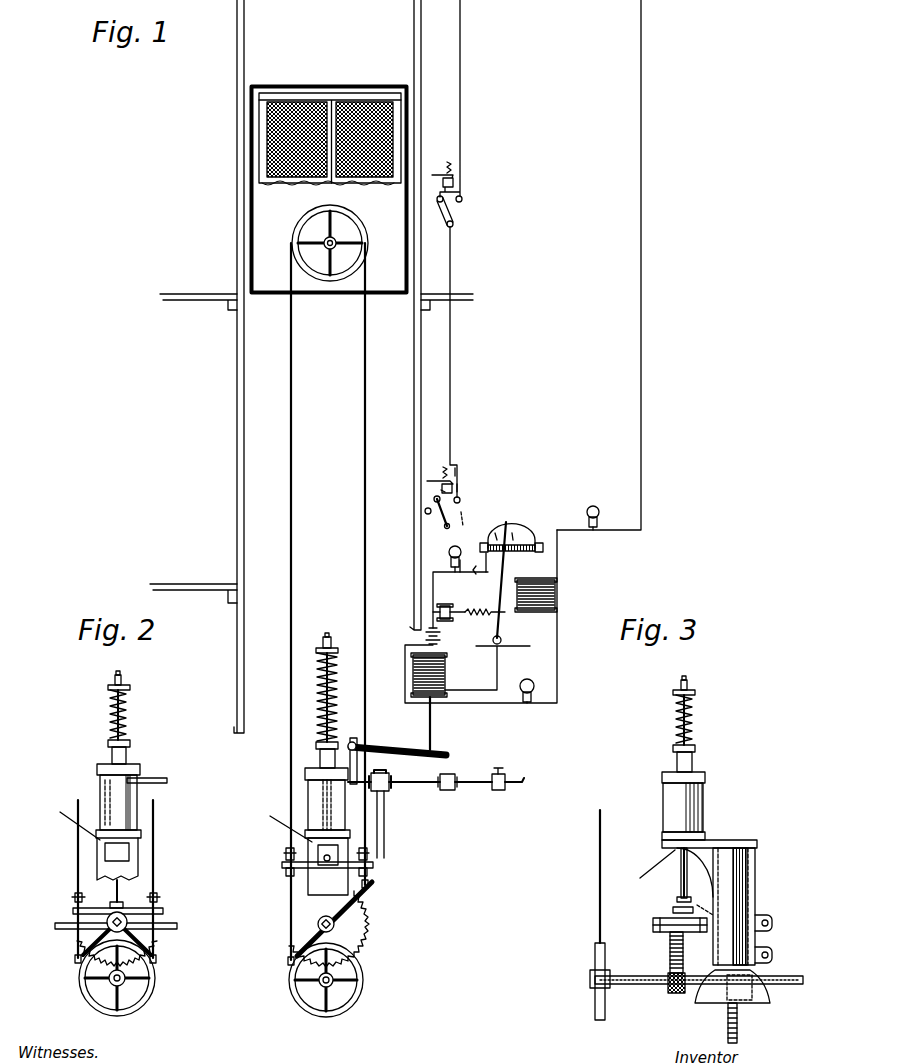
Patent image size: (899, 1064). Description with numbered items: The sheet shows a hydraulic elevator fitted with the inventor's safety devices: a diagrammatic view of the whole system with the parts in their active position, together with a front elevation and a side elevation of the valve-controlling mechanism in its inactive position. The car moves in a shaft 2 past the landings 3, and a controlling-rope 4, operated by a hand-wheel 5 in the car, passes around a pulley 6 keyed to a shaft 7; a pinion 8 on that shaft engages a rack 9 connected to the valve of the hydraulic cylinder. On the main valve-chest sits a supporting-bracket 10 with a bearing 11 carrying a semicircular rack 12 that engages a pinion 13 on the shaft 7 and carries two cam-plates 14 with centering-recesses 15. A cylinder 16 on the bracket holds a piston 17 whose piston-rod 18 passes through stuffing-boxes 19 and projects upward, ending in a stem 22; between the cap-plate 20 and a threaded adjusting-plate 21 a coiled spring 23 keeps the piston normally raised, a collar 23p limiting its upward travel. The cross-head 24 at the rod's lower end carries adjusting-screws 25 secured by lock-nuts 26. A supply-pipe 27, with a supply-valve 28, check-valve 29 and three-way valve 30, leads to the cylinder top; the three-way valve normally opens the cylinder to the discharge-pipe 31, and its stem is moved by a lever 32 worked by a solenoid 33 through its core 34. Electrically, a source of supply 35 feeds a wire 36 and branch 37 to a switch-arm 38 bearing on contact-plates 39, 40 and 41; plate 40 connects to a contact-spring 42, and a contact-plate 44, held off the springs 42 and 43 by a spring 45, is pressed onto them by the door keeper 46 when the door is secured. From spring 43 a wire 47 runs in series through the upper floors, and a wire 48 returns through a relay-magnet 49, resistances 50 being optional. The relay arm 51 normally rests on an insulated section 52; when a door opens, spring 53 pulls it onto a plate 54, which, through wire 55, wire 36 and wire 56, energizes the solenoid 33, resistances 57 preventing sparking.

In FIG. 1, the shaft 2 is at (329, 163).
In FIG. 1, the landings 3 is at (311, 439).
In FIG. 1, the controlling-rope 4 is at (366, 424).
In FIG. 2, the controlling-rope 4 is at (78, 852).
In FIG. 3, the controlling-rope 4 is at (600, 862).
In FIG. 1, the hand-wheel 5 is at (360, 229).
In FIG. 1, the pulley 6 is at (333, 980).
In FIG. 2, the pulley 6 is at (121, 978).
In FIG. 3, the pulley 6 is at (595, 960).
In FIG. 1, the shaft 7 is at (333, 985).
In FIG. 2, the shaft 7 is at (124, 984).
In FIG. 3, the shaft 7 is at (630, 976).
In FIG. 3, the pinion 8 is at (750, 995).
In FIG. 3, the rack 9 is at (728, 1030).
In FIG. 1, the supporting-bracket 10 is at (328, 866).
In FIG. 2, the supporting-bracket 10 is at (130, 858).
In FIG. 3, the supporting-bracket 10 is at (755, 862).
In FIG. 3, the bearing 11 is at (707, 905).
In FIG. 1, the semicircular rack 12 is at (372, 930).
In FIG. 2, the semicircular rack 12 is at (162, 940).
In FIG. 3, the semicircular rack 12 is at (670, 948).
In FIG. 3, the pinion 13 is at (676, 993).
In FIG. 1, the cam-plates 14 is at (289, 964).
In FIG. 2, the cam-plates 14 is at (75, 925).
In FIG. 3, the cam-plates 14 is at (653, 925).
In FIG. 1, the centering-recesses 15 is at (372, 890).
In FIG. 2, the centering-recesses 15 is at (80, 912).
In FIG. 1, the cylinder 16 is at (310, 790).
In FIG. 2, the cylinder 16 is at (100, 784).
In FIG. 3, the cylinder 16 is at (660, 797).
In FIG. 2, the piston 17 is at (133, 812).
In FIG. 1, the piston-rod 18 is at (330, 716).
In FIG. 2, the piston-rod 18 is at (116, 893).
In FIG. 3, the piston-rod 18 is at (681, 880).
In FIG. 1, the stuffing-boxes 19 is at (320, 760).
In FIG. 2, the stuffing-boxes 19 is at (126, 757).
In FIG. 3, the stuffing-boxes 19 is at (692, 765).
In FIG. 1, the cap-plate 20 is at (316, 746).
In FIG. 2, the cap-plate 20 is at (130, 743).
In FIG. 3, the cap-plate 20 is at (695, 748).
In FIG. 1, the adjusting-plate 21 is at (345, 650).
In FIG. 2, the adjusting-plate 21 is at (130, 687).
In FIG. 3, the adjusting-plate 21 is at (695, 691).
In FIG. 1, the stem 22 is at (320, 634).
In FIG. 2, the stem 22 is at (135, 674).
In FIG. 3, the stem 22 is at (696, 673).
In FIG. 1, the coiled spring 23 is at (338, 686).
In FIG. 2, the coiled spring 23 is at (126, 712).
In FIG. 3, the coiled spring 23 is at (692, 712).
In FIG. 1, the collar 23p is at (281, 822).
In FIG. 2, the collar 23p is at (70, 819).
In FIG. 3, the collar 23p is at (650, 869).
In FIG. 1, the cross-head 24 is at (373, 865).
In FIG. 2, the cross-head 24 is at (130, 912).
In FIG. 3, the cross-head 24 is at (673, 910).
In FIG. 1, the adjusting-screws 25 is at (286, 852).
In FIG. 2, the adjusting-screws 25 is at (75, 897).
In FIG. 1, the lock-nuts 26 is at (287, 872).
In FIG. 1, the supply-pipe 27 is at (526, 772).
In FIG. 2, the supply-pipe 27 is at (160, 778).
In FIG. 1, the supply-valve 28 is at (485, 770).
In FIG. 1, the check-valve 29 is at (447, 791).
In FIG. 1, the three-way valve 30 is at (389, 778).
In FIG. 1, the discharge-pipe 31 is at (384, 808).
In FIG. 1, the lever 32 is at (397, 757).
In FIG. 1, the solenoid 33 is at (447, 675).
In FIG. 1, the core 34 is at (432, 724).
In FIG. 1, the source of electric supply 35 is at (441, 641).
In FIG. 1, the wire 36 is at (433, 592).
In FIG. 1, the branch 37 is at (471, 524).
In FIG. 1, the switch-arm 38 is at (439, 523).
In FIG. 1, the contact-plate 39 is at (426, 513).
In FIG. 1, the contact-plate 40 is at (434, 499).
In FIG. 1, the contact-plate 41 is at (461, 498).
In FIG. 1, the contact-spring 42 is at (441, 490).
In FIG. 1, the contact-spring 43 is at (461, 493).
In FIG. 1, the contact-plate 44 is at (459, 483).
In FIG. 1, the spring 45 is at (458, 470).
In FIG. 1, the keeper or latch 46 is at (437, 478).
In FIG. 1, the wire 47 is at (452, 397).
In FIG. 1, the wire 48 is at (641, 258).
In FIG. 1, the relay-magnet 49 is at (536, 604).
In FIG. 1, the resistances 50 is at (522, 596).
In FIG. 1, the arm of the relay 51 is at (512, 563).
In FIG. 1, the insulated section 52 is at (530, 538).
In FIG. 1, the spring 53 is at (485, 620).
In FIG. 1, the plate 54 is at (513, 532).
In FIG. 1, the wire 55 is at (485, 578).
In FIG. 1, the wire 56 is at (497, 665).
In FIG. 1, the resistances 57 is at (497, 532).